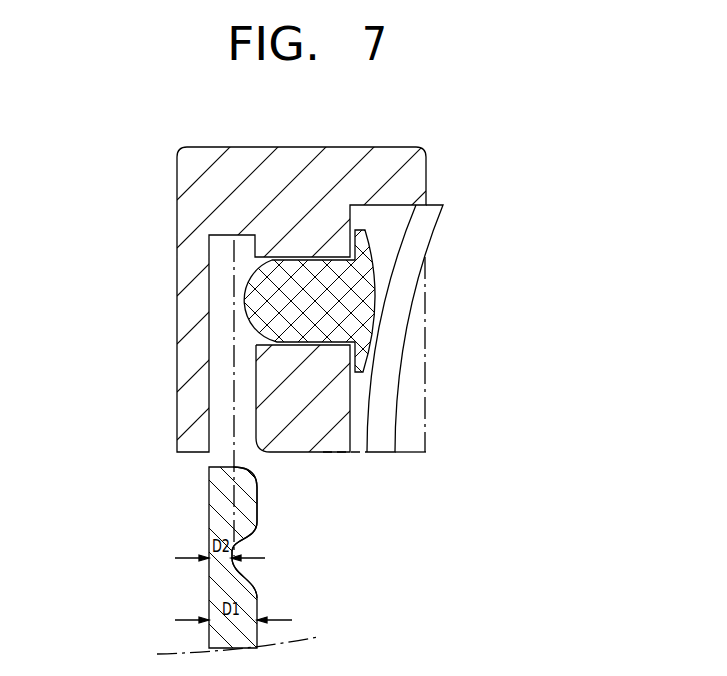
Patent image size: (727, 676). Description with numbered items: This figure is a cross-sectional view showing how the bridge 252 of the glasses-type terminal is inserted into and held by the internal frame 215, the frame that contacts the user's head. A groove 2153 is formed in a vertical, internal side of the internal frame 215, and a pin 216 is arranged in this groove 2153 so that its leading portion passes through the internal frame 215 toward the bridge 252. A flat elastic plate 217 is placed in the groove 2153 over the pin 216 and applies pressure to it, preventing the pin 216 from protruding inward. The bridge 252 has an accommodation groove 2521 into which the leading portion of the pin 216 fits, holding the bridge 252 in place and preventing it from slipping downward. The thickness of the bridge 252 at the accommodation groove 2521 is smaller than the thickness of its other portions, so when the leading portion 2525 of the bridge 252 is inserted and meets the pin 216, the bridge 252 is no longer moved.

The internal frame 215 is at (413, 191).
The pin 216 is at (358, 287).
The plate 217 is at (400, 308).
The groove 2153 is at (413, 347).
The bridge 252 is at (220, 517).
The leading portion of the bridge 2525 is at (236, 487).
The accommodation groove 2521 is at (238, 580).